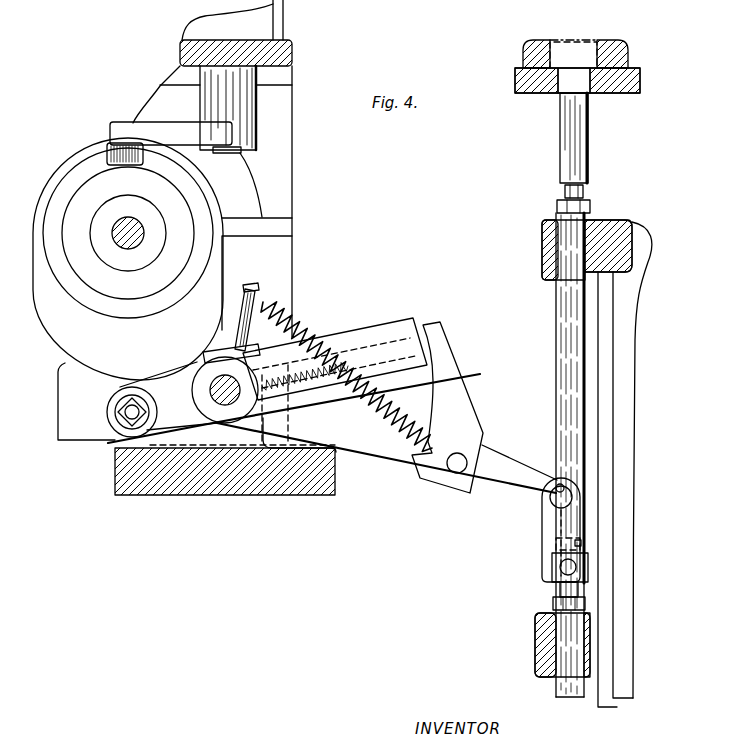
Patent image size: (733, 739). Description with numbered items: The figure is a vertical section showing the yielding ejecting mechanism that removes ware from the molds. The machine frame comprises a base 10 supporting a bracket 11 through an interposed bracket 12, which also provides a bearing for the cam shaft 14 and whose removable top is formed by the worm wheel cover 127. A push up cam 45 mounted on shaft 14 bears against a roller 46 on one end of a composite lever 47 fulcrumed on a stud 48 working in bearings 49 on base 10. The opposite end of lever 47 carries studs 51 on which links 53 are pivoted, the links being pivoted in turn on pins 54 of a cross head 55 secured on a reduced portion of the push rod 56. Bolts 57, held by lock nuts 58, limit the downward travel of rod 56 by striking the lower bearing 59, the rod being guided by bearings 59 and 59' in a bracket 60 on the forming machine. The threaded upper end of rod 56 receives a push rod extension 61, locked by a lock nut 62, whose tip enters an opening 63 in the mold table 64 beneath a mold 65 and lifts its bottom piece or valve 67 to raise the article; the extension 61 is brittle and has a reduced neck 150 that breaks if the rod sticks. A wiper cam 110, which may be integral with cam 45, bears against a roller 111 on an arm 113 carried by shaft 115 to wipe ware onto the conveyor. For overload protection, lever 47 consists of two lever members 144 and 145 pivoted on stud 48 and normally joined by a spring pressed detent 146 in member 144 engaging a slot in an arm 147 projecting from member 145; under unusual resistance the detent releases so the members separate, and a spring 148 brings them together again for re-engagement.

The base 10 is at (288, 490).
The bracket 11 is at (292, 55).
The bracket 12 is at (280, 267).
The cam shaft 14 is at (126, 250).
The push up cam 45 is at (67, 343).
The roller 46 is at (110, 437).
The composite lever 47 is at (175, 422).
The stud 48 is at (225, 403).
The bearings 49 is at (233, 437).
The studs 51 is at (550, 500).
The links 53 is at (573, 525).
The pins 54 is at (573, 565).
The cross head 55 is at (550, 575).
The push rod 56 is at (565, 302).
The bolts 57 is at (553, 603).
The lock nuts 58 is at (567, 547).
The bearing 59 is at (540, 645).
The bearing 59' is at (621, 249).
The bracket 60 is at (627, 312).
The push rod extension 61 is at (590, 148).
The lock nut 62 is at (592, 208).
The openings 63 is at (593, 88).
The mold table 64 is at (635, 83).
The mold 65 is at (620, 53).
The bottom piece 67 is at (587, 43).
The wiper cam 110 is at (118, 317).
The roller 111 is at (107, 148).
The arm 113 is at (167, 130).
The shaft 115 is at (243, 155).
The cover 127 is at (250, 202).
The lever member 144 is at (360, 335).
The lever member 145 is at (540, 433).
The spring pressed detent 146 is at (397, 337).
The arm 147 is at (443, 358).
The spring 148 is at (458, 378).
The reduced neck 150 is at (587, 190).